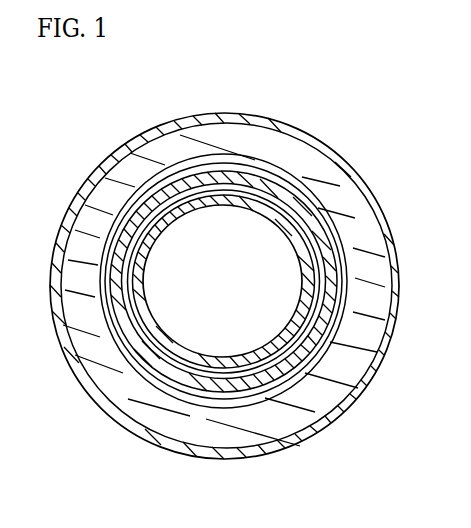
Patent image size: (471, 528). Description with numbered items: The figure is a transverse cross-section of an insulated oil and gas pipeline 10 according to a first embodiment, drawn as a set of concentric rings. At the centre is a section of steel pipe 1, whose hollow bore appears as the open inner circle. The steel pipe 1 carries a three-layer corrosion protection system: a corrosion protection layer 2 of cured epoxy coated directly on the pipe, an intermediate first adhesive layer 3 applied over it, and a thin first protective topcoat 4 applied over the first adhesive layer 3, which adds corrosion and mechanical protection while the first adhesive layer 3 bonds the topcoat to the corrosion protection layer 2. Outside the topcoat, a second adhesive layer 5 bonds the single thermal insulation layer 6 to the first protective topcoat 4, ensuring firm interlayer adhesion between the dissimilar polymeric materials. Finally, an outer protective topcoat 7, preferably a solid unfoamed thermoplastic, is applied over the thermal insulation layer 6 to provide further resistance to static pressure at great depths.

The steel pipe 1 is at (258, 368).
The corrosion protection layer 2 is at (207, 380).
The first adhesive layer 3 is at (322, 233).
The first protective topcoat 4 is at (305, 190).
The second adhesive layer 5 is at (130, 372).
The thermal insulation layer 6 is at (183, 128).
The outer protective topcoat 7 is at (102, 163).
The insulated oil and gas pipeline 10 is at (266, 103).